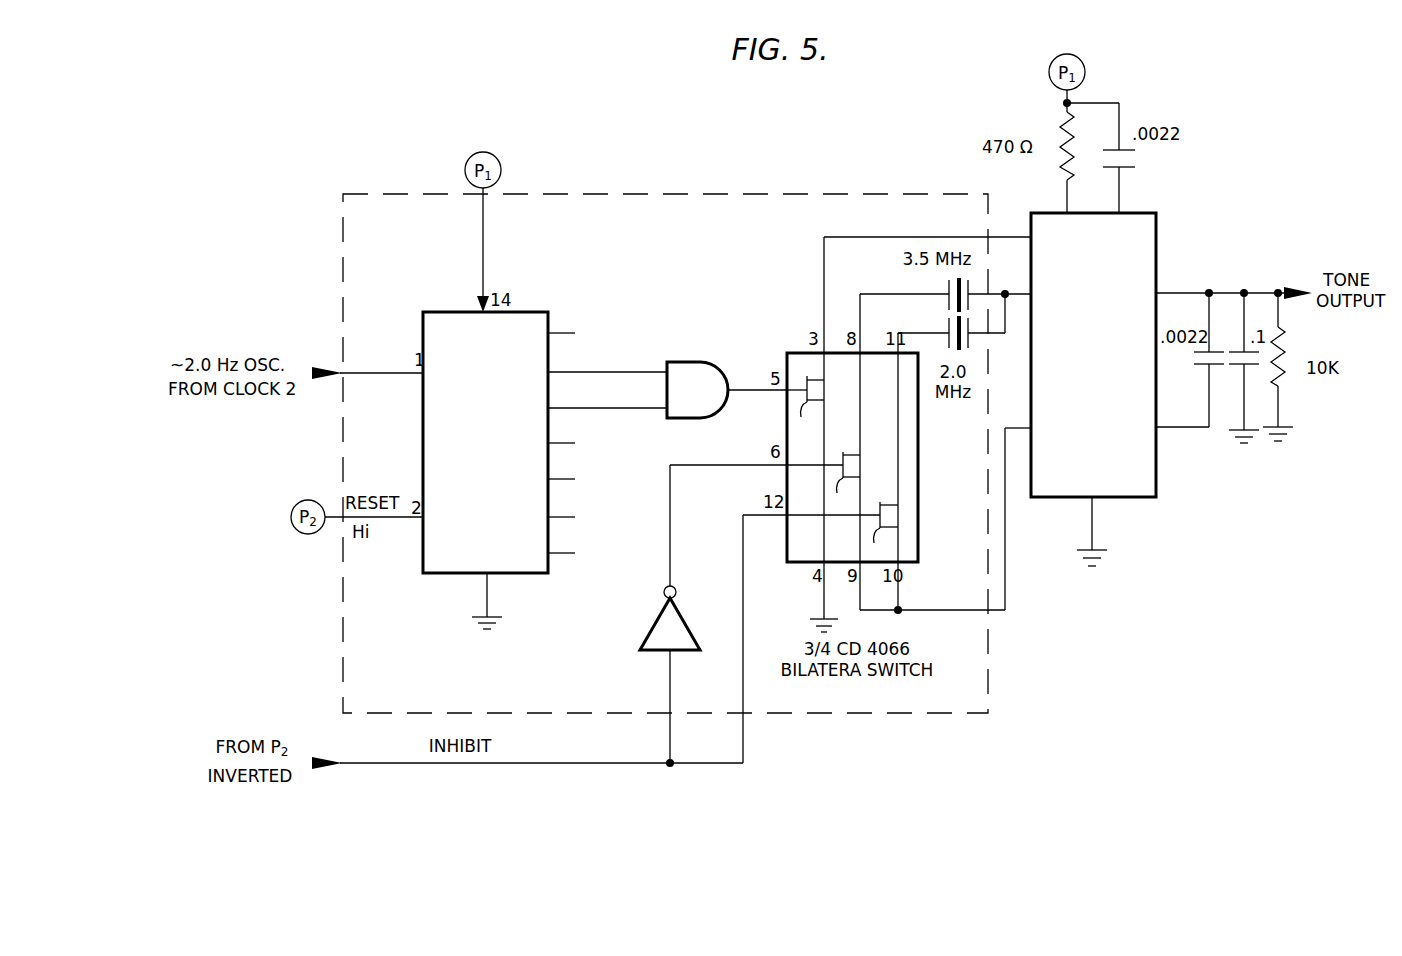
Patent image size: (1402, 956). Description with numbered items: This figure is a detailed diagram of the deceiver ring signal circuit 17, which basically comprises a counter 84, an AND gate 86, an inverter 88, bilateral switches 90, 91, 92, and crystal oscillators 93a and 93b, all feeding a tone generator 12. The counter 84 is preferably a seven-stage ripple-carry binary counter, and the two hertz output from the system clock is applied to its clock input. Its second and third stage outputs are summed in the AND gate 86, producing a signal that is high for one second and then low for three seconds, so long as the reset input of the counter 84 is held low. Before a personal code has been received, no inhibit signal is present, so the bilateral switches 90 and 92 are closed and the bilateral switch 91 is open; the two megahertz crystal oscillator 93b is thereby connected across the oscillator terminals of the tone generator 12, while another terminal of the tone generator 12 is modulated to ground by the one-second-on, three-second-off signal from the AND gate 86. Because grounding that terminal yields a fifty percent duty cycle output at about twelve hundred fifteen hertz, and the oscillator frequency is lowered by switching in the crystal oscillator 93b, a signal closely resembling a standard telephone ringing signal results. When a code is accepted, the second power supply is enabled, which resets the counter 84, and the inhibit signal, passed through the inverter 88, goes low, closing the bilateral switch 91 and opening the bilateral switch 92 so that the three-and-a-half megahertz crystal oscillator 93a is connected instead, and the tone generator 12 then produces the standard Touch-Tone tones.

The deceiver ring signal circuit 17 is at (622, 194).
The counter 84 is at (470, 575).
The AND gate 86 is at (680, 420).
The inverter 88 is at (688, 622).
The bilateral switch 90 is at (805, 408).
The bilateral switch 91 is at (765, 480).
The bilateral switch 92 is at (820, 529).
The crystal oscillator 93a is at (948, 292).
The crystal oscillator 93b is at (948, 330).
The tone generator 12 is at (1158, 484).